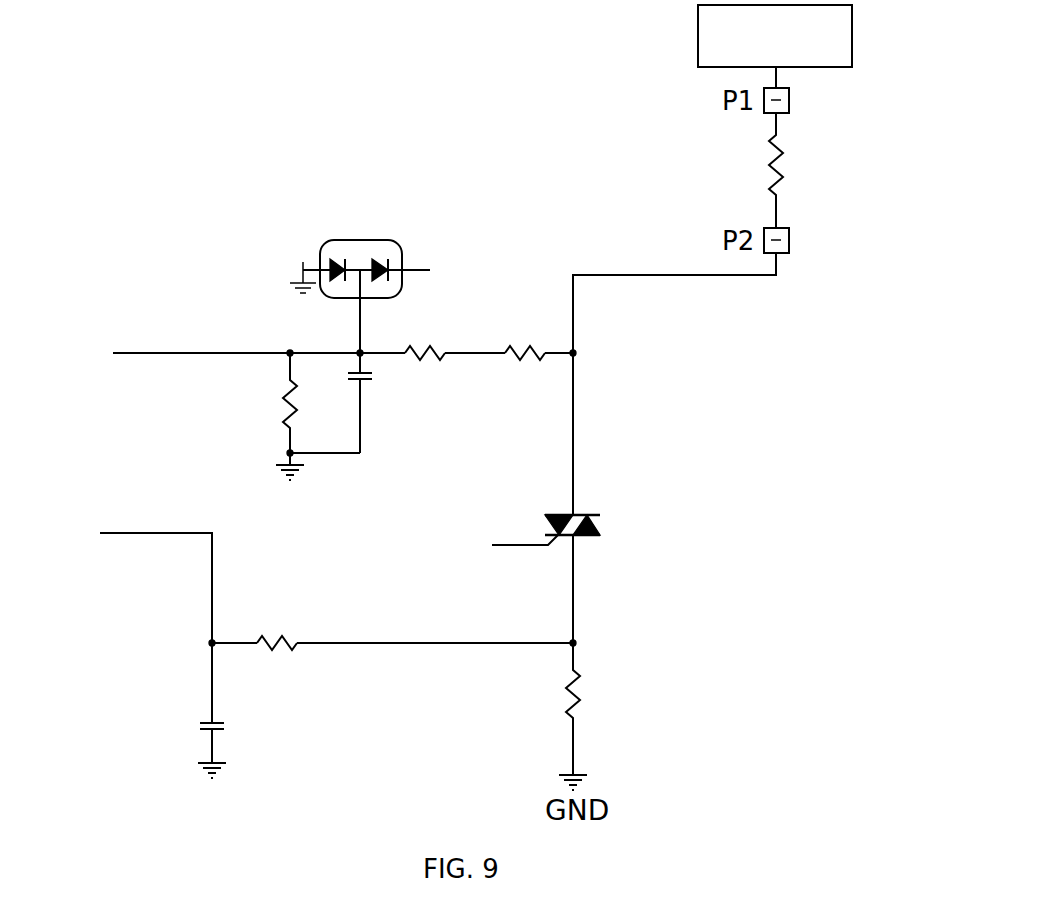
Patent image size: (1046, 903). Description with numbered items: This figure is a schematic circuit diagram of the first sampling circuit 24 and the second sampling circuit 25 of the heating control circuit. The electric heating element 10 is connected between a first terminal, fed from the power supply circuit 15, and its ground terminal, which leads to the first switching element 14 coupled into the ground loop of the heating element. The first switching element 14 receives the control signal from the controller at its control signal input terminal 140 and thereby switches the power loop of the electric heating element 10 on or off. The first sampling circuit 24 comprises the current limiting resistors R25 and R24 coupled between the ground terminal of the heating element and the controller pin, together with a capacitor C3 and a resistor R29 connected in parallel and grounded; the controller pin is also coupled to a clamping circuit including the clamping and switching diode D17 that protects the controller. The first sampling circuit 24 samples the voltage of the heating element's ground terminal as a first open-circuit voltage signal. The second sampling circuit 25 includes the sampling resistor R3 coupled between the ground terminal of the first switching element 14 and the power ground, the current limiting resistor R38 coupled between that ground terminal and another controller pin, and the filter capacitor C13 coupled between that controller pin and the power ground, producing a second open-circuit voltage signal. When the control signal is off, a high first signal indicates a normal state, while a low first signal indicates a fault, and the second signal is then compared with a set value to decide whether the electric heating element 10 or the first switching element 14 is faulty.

The power supply circuit 15 is at (840, 47).
The electric heating element 10 is at (783, 162).
The first sampling circuit 24 is at (193, 301).
The second sampling circuit 25 is at (300, 664).
The first switching element 14 is at (552, 516).
The control signal input terminal 140 is at (512, 530).
The clamping and switching diode D17 is at (360, 230).
The current limiting resistor R24 is at (430, 360).
The current limiting resistor R25 is at (520, 343).
The resistor R29 is at (278, 410).
The capacitor C3 is at (372, 380).
The current limiting resistor R38 is at (280, 636).
The filter capacitor C13 is at (228, 730).
The sampling resistor R3 is at (583, 686).